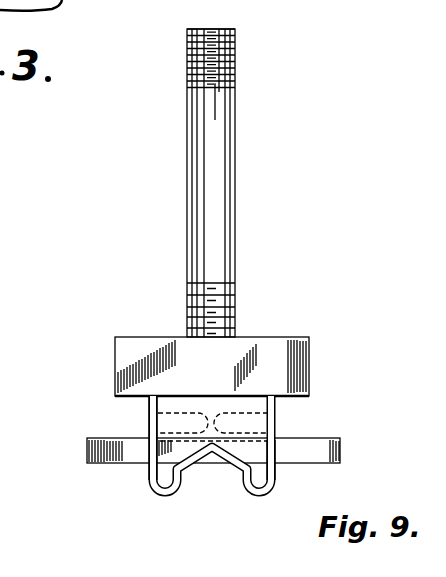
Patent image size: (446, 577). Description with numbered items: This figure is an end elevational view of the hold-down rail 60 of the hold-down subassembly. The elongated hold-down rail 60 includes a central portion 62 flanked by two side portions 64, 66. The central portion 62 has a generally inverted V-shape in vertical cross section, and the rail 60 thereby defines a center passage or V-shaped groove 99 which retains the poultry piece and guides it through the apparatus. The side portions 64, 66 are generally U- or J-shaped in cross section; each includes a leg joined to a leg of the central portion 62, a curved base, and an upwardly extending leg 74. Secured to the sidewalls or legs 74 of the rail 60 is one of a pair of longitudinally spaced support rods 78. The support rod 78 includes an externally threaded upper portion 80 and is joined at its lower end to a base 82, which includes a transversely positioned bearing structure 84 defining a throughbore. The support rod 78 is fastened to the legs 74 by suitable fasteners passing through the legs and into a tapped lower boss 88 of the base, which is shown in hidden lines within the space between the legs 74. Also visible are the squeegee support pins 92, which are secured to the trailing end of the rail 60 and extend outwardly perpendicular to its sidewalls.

The hold-down rail 60 is at (221, 447).
The central portion 62 is at (210, 468).
The side portion 64 is at (145, 461).
The side portion 66 is at (283, 465).
The upwardly extending leg 74 is at (147, 410).
The support rod 78 is at (250, 183).
The externally threaded upper portion 80 is at (233, 57).
The base 82 is at (247, 322).
The bearing structure 84 is at (265, 345).
The tapped lower boss 88 is at (170, 410).
The squeegee support pin 92 is at (87, 447).
The V-shaped groove 99 is at (218, 483).